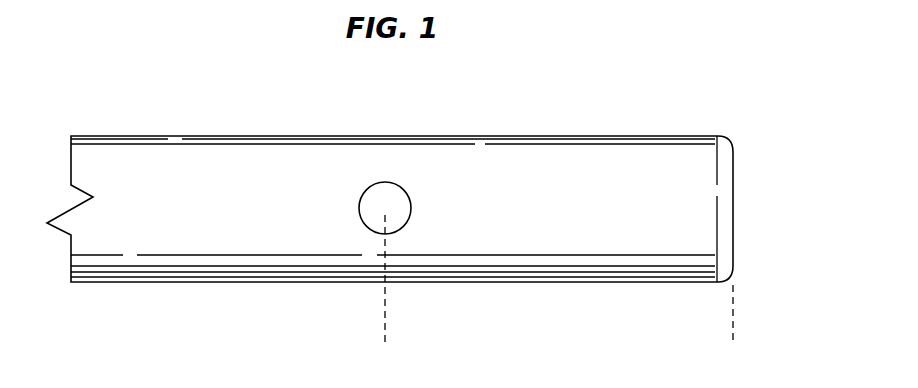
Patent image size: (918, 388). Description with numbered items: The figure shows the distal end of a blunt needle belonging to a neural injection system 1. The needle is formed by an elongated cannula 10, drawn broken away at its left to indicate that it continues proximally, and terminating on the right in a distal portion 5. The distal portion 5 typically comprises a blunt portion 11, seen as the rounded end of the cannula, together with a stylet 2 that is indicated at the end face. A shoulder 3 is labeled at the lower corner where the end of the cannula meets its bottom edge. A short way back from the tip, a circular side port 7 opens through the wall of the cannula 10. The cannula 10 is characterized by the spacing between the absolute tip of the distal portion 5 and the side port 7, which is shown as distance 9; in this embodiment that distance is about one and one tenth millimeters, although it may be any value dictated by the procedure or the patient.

The neural injection system 1 is at (637, 114).
The stylet 2 is at (740, 218).
The shoulder 3 is at (727, 280).
The distal portion 5 is at (735, 182).
The side port 7 is at (378, 190).
The distance 9 is at (725, 323).
The cannula 10 is at (497, 183).
The blunt portion 11 is at (742, 136).